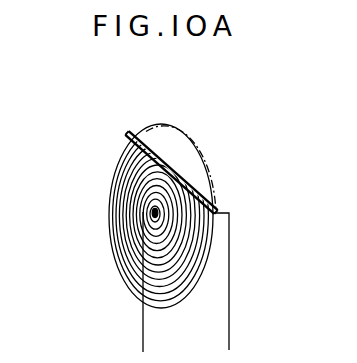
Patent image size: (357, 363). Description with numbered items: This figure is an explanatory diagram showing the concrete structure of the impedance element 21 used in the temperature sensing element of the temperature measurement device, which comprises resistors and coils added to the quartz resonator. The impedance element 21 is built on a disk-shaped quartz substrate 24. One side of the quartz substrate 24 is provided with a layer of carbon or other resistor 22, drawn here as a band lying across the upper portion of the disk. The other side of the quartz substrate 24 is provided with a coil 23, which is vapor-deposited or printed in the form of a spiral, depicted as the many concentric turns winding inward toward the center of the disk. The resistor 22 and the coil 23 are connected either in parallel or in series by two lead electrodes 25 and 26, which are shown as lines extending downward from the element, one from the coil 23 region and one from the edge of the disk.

The impedance element 21 is at (126, 193).
The resistor 22 is at (143, 140).
The coil 23 is at (122, 212).
The quartz substrate 24 is at (118, 162).
The lead electrode 25 is at (143, 333).
The lead electrode 26 is at (230, 315).